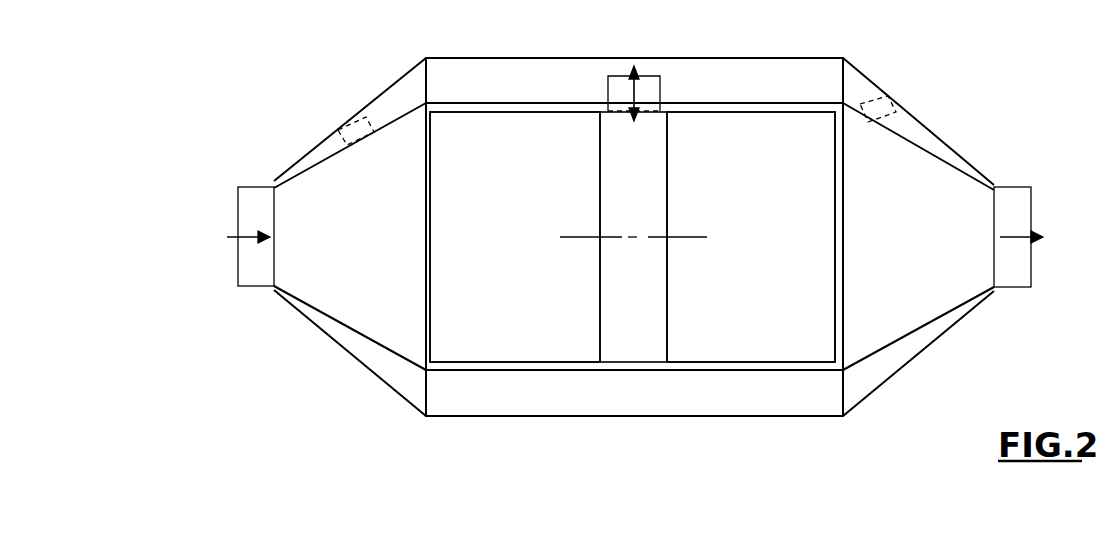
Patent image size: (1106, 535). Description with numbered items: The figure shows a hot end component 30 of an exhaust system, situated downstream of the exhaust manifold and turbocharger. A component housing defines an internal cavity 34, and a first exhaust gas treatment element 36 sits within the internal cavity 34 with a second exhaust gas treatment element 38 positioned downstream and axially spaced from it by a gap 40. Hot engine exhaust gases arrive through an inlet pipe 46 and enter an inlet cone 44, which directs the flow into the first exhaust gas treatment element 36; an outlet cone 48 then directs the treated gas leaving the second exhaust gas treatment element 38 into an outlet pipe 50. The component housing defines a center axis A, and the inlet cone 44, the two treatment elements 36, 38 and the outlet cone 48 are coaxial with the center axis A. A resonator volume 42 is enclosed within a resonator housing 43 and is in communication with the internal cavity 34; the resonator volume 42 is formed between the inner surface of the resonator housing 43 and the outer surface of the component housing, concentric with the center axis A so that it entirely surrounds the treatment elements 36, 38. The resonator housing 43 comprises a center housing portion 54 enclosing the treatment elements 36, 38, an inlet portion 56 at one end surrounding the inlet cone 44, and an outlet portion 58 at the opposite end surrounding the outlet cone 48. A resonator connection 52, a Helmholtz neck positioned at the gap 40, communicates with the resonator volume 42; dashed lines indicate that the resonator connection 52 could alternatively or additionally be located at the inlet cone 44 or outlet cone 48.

The hot end component 30 is at (950, 90).
The internal cavity 34 is at (723, 362).
The first exhaust gas treatment element 36 is at (525, 238).
The second exhaust gas treatment element 38 is at (775, 238).
The gap 40 is at (633, 347).
The resonator volume 42 is at (750, 96).
The resonator housing 43 is at (548, 417).
The inlet cone 44 is at (357, 333).
The inlet pipe 46 is at (253, 288).
The outlet cone 48 is at (937, 157).
The outlet pipe 50 is at (1013, 288).
The resonator connection 52 is at (365, 118).
The center housing portion 54 is at (497, 417).
The inlet portion 56 is at (377, 376).
The outlet portion 58 is at (898, 372).
The center axis A is at (683, 233).